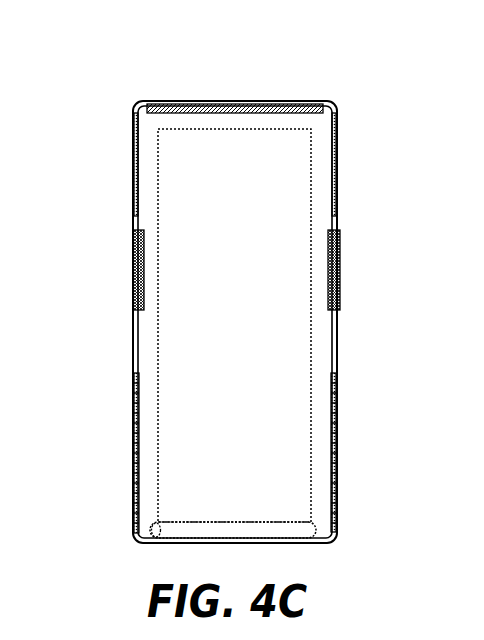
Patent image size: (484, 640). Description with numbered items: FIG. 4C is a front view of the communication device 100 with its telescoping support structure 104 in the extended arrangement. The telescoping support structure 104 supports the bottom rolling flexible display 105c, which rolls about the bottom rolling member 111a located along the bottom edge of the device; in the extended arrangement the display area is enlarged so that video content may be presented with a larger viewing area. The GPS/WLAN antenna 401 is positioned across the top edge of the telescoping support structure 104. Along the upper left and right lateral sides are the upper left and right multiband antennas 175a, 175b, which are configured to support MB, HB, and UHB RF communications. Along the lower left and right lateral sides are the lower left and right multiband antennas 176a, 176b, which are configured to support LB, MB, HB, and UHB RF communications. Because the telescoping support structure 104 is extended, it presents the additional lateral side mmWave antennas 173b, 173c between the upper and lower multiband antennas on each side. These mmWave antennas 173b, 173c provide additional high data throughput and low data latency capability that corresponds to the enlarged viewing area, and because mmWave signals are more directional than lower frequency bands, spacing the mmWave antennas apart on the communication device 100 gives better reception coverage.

The communication device 100 is at (236, 302).
The telescoping support structure 104 is at (338, 337).
The bottom rolling flexible display 105c is at (234, 325).
The GPS/WLAN antenna 401 is at (150, 95).
The upper left multiband antenna 175a is at (124, 218).
The upper right multiband antenna 175b is at (346, 218).
The lateral side mmWave antenna 173b is at (124, 310).
The lateral side mmWave antenna 173c is at (346, 310).
The lower left multiband antenna 176a is at (124, 528).
The lower right multiband antenna 176b is at (346, 528).
The bottom rolling member 111a is at (318, 530).